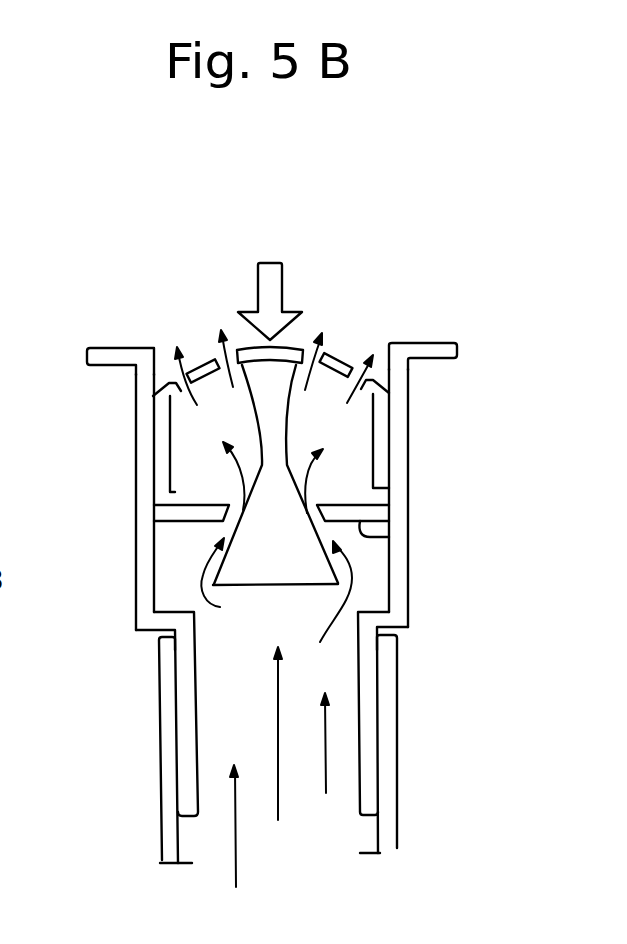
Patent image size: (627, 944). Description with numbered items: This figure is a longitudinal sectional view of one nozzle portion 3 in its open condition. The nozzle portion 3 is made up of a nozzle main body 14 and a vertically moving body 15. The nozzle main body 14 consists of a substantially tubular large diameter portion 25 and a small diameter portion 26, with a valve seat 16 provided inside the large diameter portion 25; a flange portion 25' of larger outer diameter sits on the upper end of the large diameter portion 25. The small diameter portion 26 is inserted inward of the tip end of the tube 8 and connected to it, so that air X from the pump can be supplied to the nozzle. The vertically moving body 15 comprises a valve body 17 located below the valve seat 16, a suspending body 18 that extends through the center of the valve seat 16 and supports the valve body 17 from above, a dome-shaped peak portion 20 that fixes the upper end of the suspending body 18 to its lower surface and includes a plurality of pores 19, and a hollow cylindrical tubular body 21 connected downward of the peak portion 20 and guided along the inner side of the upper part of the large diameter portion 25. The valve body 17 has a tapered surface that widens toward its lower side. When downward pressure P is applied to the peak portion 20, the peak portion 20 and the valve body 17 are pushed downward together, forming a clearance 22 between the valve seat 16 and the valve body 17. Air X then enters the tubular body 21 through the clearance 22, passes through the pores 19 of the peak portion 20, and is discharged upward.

The nozzle portion 3 is at (546, 527).
The tube 8 is at (391, 775).
The nozzle main body 14 is at (492, 562).
The vertically moving body 15 is at (367, 290).
The valve seat 16 is at (390, 538).
The valve body 17 is at (277, 586).
The suspending body 18 is at (287, 432).
The pores 19 is at (236, 349).
The peak portion 20 is at (283, 346).
The tubular body 21 is at (383, 473).
The clearance 22 is at (231, 519).
The large diameter portion 25 is at (310, 499).
The flange portion 25' is at (272, 320).
The small diameter portion 26 is at (371, 662).
The downward pressure P is at (282, 283).
The air X is at (328, 740).